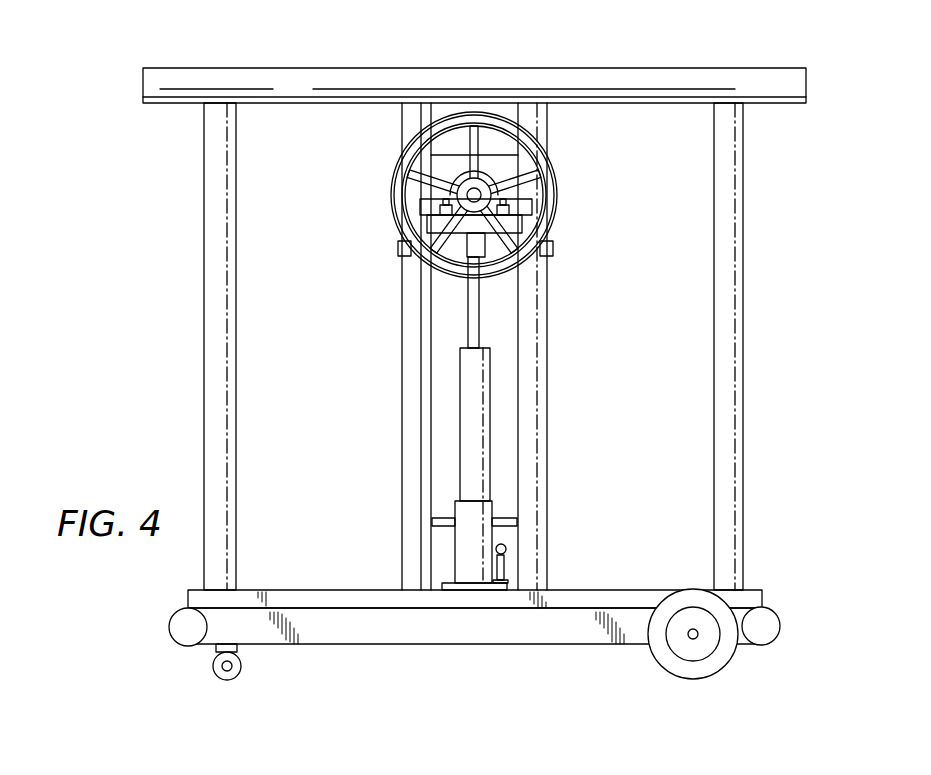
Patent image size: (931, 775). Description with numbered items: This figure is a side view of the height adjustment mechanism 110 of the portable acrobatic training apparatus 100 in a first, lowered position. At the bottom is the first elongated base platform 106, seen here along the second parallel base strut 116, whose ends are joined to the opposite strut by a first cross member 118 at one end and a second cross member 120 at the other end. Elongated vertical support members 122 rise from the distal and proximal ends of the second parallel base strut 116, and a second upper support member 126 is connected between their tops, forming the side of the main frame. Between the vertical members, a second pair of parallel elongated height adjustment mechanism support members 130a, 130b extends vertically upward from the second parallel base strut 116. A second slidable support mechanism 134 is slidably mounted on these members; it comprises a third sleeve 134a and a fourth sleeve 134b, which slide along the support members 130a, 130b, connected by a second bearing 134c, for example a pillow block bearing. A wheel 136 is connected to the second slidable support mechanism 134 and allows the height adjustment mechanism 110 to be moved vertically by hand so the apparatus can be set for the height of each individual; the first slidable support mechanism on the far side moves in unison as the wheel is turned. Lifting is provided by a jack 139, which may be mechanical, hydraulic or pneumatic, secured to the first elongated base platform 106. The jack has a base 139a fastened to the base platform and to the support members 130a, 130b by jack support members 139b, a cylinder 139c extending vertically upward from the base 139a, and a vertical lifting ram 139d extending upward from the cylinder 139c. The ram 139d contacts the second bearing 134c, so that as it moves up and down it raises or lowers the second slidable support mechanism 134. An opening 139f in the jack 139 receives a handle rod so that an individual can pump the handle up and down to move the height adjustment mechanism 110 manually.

The portable acrobatic training apparatus 100 is at (190, 258).
The first elongated base platform 106 is at (270, 600).
The height adjustment mechanism 110 is at (563, 303).
The second parallel base strut 116 is at (355, 628).
The first cross member 118 is at (178, 628).
The second cross member 120 is at (762, 628).
The elongated vertical support member 122 is at (213, 397).
The second upper support member 126 is at (607, 68).
The second pair of elongated height adjustment mechanism support member 130a is at (411, 440).
The second pair of elongated height adjustment mechanism support member 130b is at (543, 412).
The second slidable support mechanism 134 is at (562, 167).
The third sleeve 134a is at (400, 246).
The fourth sleeve 134b is at (547, 250).
The second bearing 134c is at (430, 220).
The wheel 136 is at (553, 195).
The jack 139 is at (472, 553).
The base 139a is at (477, 577).
The jack support members 139b is at (445, 519).
The cylinder 139c is at (478, 393).
The vertical lifting ram 139d is at (470, 307).
The opening 139f is at (506, 548).